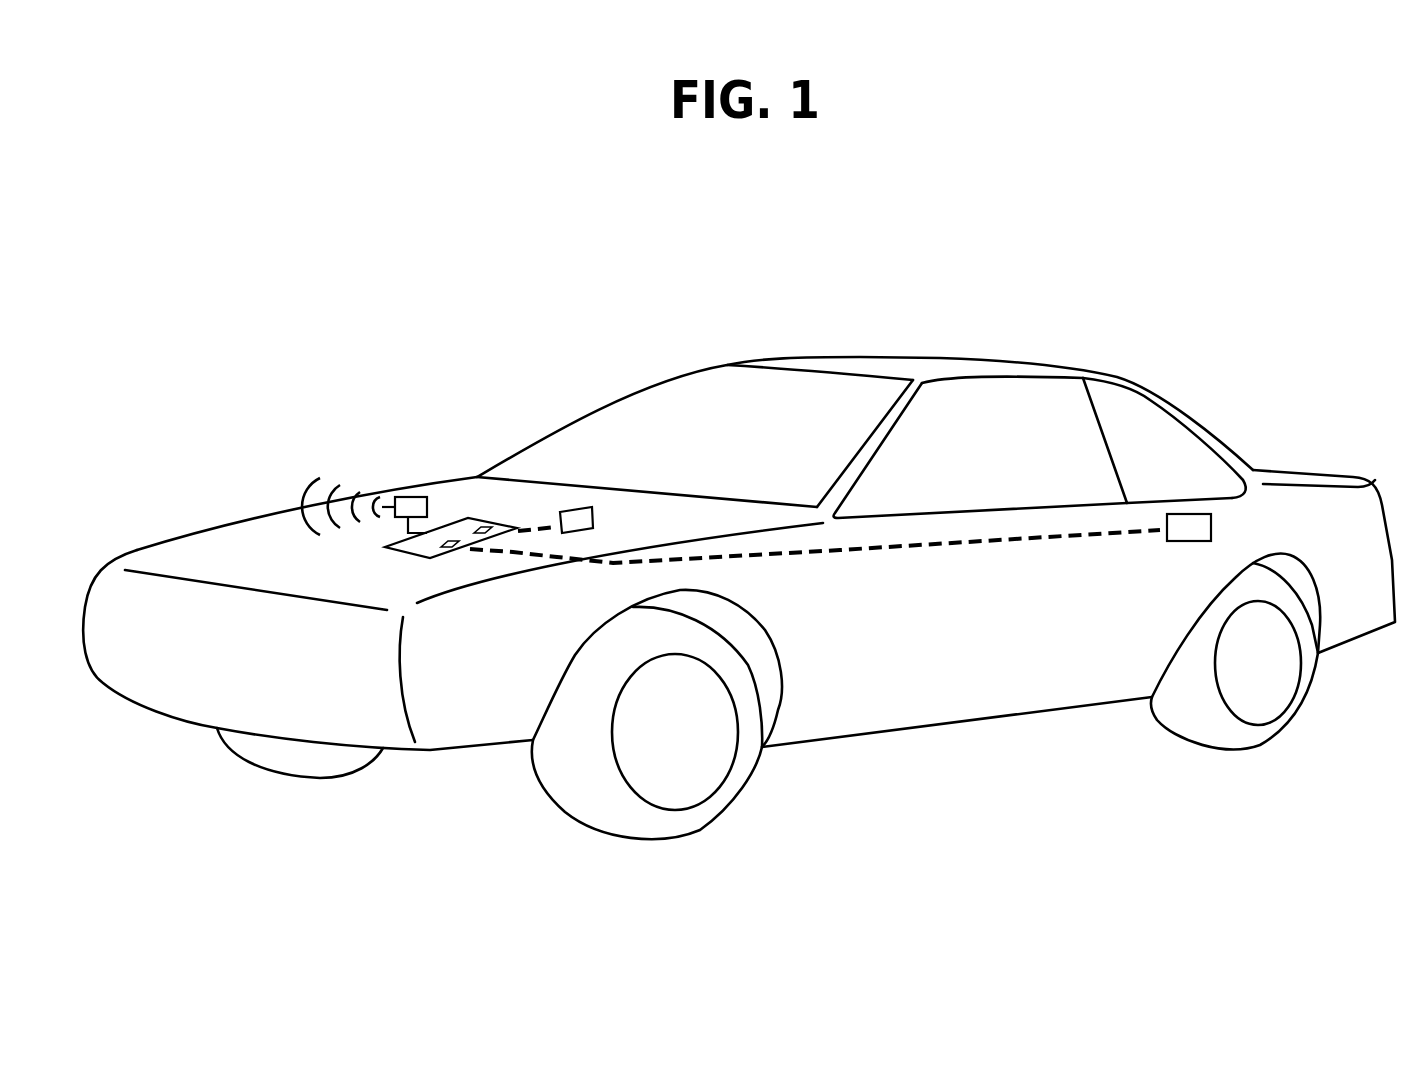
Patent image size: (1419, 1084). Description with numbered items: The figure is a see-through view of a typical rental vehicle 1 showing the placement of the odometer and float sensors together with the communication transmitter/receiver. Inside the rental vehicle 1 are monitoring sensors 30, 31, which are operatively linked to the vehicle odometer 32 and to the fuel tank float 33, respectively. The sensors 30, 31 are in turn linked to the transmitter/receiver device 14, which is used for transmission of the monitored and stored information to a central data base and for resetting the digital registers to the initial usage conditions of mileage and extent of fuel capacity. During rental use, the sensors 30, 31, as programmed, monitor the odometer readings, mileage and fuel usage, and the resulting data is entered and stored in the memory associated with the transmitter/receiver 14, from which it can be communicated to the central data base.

The rental vehicle 1 is at (1061, 346).
The transmitter/receiver device 14 is at (410, 497).
The monitoring sensor 30 is at (487, 526).
The monitoring sensor 31 is at (453, 551).
The vehicle odometer 32 is at (577, 512).
The fuel tank float 33 is at (1178, 538).